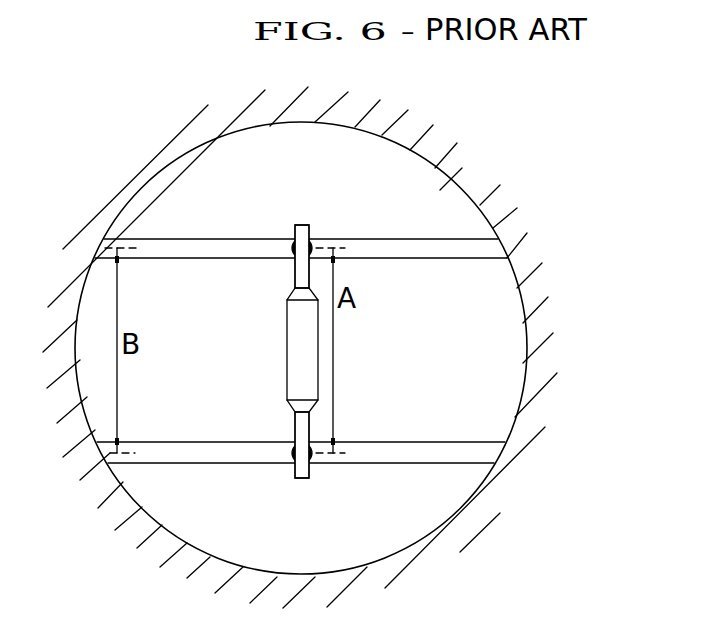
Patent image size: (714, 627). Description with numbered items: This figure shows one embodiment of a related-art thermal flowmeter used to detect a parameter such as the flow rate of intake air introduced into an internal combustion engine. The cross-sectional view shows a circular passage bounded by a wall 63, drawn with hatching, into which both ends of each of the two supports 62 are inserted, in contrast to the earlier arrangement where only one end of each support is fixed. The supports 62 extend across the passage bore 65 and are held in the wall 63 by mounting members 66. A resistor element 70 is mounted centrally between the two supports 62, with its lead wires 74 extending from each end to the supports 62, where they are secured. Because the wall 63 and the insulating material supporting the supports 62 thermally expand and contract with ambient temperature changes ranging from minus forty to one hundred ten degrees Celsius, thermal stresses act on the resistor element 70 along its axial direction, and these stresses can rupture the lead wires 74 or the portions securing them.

The rails 62 is at (188, 248).
The wall 63 is at (115, 500).
The cylindrical bore 65 is at (445, 178).
The balls 66 is at (316, 254).
The resistor element 70 is at (357, 353).
The lead wires 74 is at (302, 276).